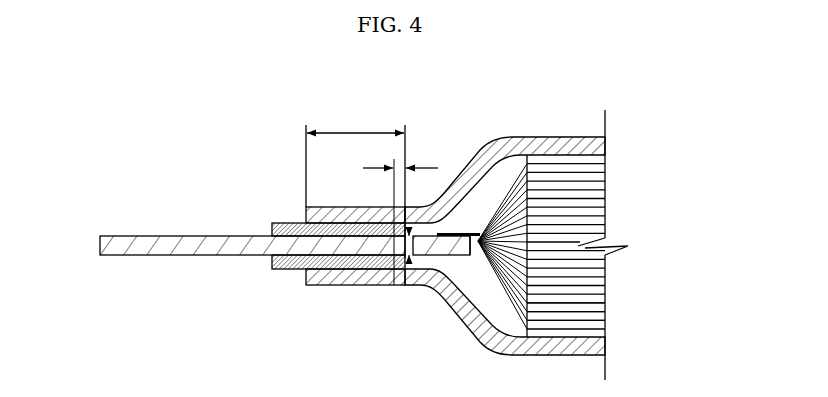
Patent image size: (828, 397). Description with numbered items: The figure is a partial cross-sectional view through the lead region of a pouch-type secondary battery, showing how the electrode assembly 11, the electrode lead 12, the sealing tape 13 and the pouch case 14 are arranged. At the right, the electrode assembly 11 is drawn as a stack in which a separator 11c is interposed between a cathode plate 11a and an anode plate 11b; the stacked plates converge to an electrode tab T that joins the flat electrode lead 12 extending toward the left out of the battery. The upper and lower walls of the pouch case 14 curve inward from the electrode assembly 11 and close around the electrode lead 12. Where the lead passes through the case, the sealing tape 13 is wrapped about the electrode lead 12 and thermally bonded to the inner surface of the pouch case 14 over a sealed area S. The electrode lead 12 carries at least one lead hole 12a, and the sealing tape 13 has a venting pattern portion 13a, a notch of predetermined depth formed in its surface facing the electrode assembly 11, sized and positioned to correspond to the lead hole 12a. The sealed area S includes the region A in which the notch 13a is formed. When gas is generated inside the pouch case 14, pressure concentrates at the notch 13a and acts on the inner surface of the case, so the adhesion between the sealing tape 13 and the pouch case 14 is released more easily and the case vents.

The electrode assembly 11 is at (502, 298).
The cathode plate 11a is at (600, 306).
The anode plate 11b is at (600, 322).
The separator 11c is at (600, 313).
The electrode lead 12 is at (178, 238).
The lead hole 12a is at (403, 258).
The sealing tape 13 is at (283, 222).
The venting pattern portion 13a is at (395, 207).
The pouch case 14 is at (553, 136).
The sealed area S is at (355, 160).
The region where the notch is formed A is at (400, 157).
The electrode tab T is at (471, 252).